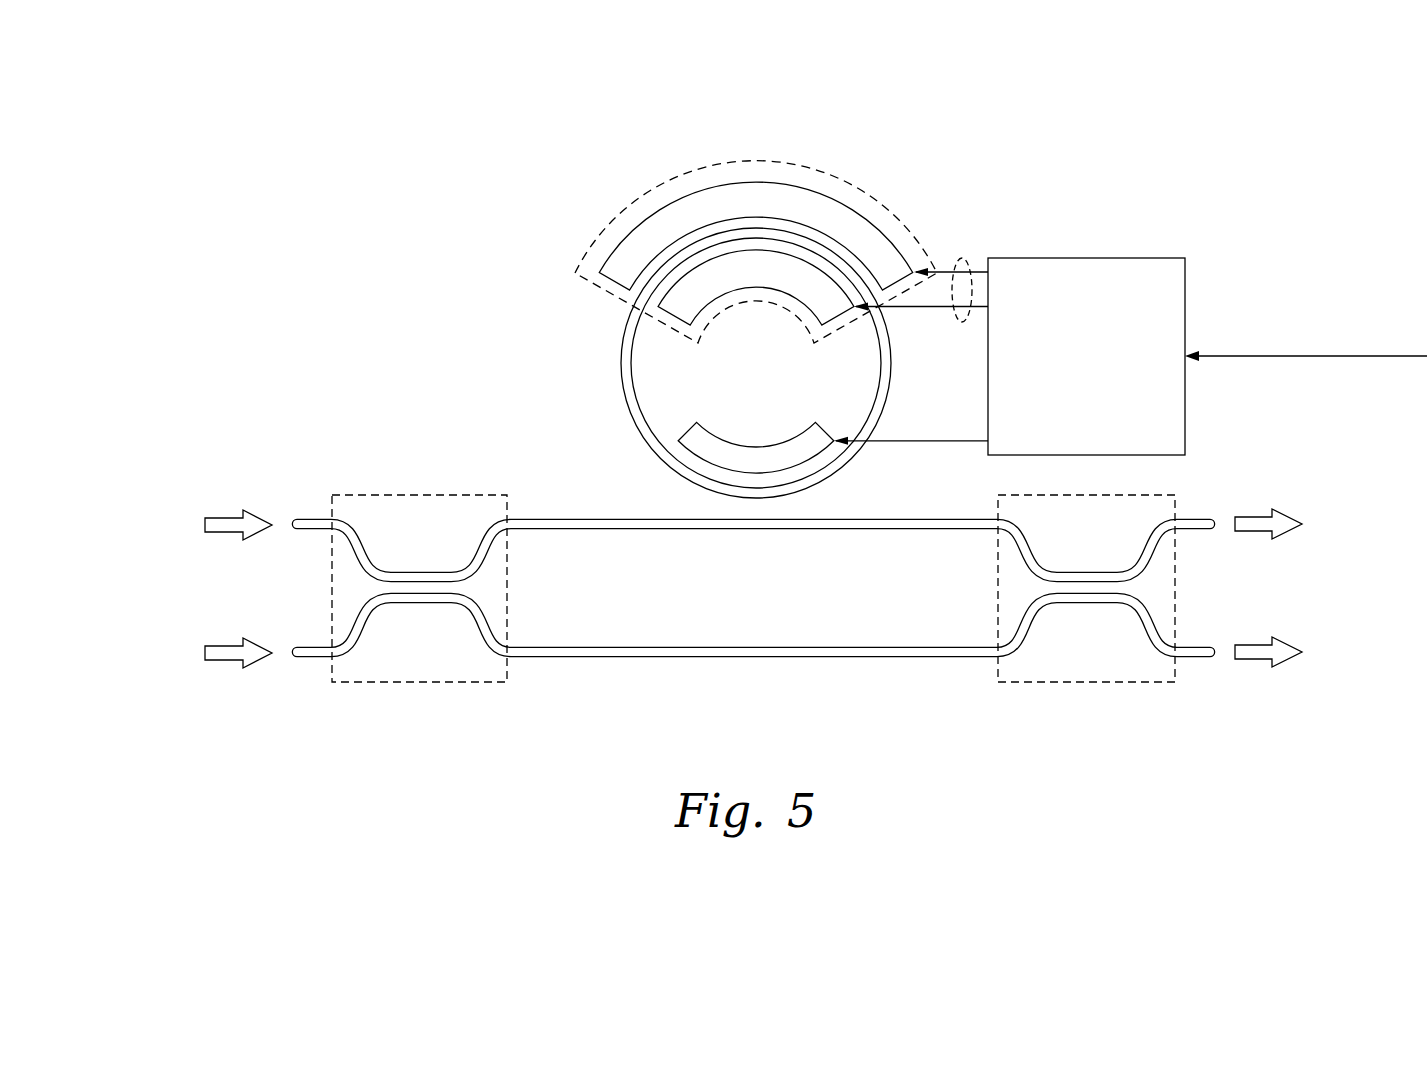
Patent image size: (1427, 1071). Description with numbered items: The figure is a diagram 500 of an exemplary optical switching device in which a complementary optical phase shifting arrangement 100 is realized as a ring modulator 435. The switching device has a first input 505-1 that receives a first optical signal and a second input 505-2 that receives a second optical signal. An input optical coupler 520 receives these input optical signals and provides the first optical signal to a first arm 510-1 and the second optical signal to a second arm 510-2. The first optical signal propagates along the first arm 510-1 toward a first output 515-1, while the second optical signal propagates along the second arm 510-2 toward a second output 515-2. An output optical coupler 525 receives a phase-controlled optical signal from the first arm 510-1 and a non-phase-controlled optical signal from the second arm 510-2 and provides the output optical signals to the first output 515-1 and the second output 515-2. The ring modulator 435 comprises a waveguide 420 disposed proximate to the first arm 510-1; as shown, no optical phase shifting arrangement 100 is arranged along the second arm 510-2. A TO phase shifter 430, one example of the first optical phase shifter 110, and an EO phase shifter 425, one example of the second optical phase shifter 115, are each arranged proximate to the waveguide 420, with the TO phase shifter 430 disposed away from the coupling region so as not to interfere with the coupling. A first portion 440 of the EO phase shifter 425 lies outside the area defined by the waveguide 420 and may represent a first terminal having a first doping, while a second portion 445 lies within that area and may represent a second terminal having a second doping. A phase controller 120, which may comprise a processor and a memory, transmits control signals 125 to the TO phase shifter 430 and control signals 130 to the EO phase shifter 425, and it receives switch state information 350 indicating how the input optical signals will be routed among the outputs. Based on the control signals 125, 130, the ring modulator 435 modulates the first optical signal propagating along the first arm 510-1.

The diagram 500 is at (276, 195).
The ring modulator 435 is at (882, 302).
The optical phase shifting arrangement 100 is at (495, 381).
The waveguide 420 is at (630, 361).
The EO phase shifter 425 is at (756, 224).
The second optical phase shifter 115 is at (756, 162).
The first portion 440 is at (662, 207).
The second portion 445 is at (810, 265).
The TO phase shifter 430 is at (756, 432).
The first optical phase shifter 110 is at (750, 447).
The control signals 130 is at (963, 258).
The control signals 125 is at (918, 440).
The phase controller 120 is at (1081, 258).
The switch state information 350 is at (1318, 357).
The first arm 510-1 is at (679, 530).
The second arm 510-2 is at (679, 647).
The input optical coupler 520 is at (410, 683).
The output optical coupler 525 is at (1093, 683).
The first input 505-1 is at (223, 517).
The second input 505-2 is at (223, 661).
The first output 515-1 is at (1253, 514).
The second output 515-2 is at (1252, 661).